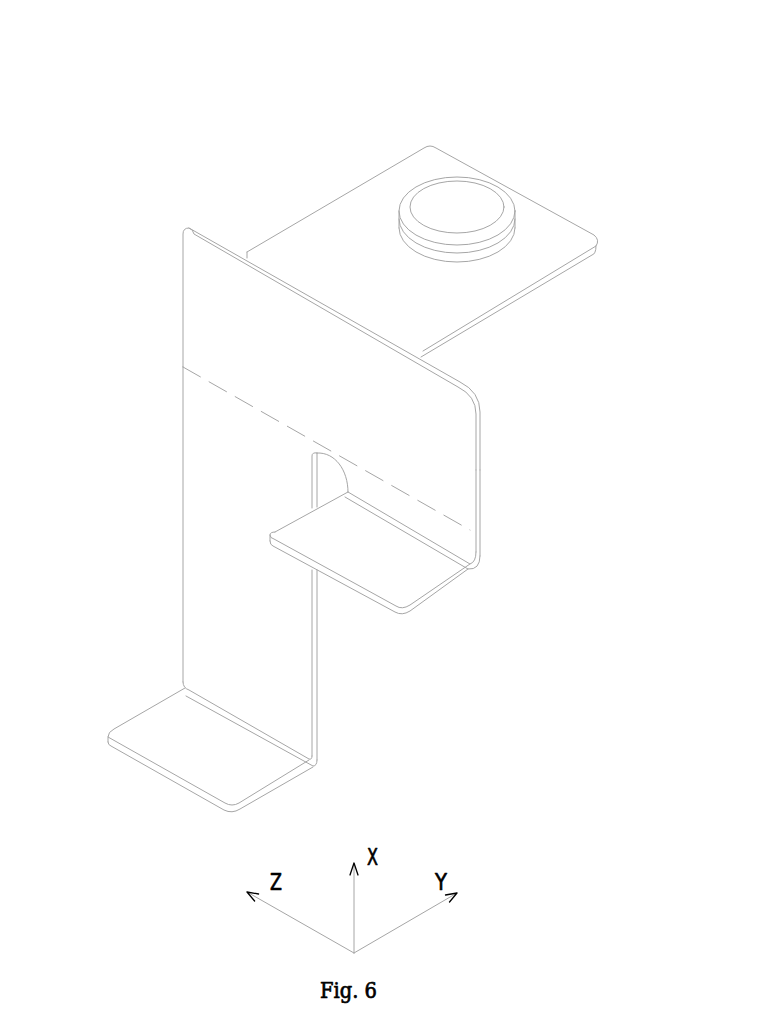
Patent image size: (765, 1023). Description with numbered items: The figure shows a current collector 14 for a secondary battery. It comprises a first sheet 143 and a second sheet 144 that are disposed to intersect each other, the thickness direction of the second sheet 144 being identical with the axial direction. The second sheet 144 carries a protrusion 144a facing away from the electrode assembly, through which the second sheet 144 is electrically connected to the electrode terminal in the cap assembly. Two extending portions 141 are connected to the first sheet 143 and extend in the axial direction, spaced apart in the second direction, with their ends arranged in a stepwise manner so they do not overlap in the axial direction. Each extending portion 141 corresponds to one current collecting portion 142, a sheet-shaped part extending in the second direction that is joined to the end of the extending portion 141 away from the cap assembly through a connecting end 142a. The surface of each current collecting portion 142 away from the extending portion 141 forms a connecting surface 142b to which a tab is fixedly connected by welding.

The current collector 14 is at (445, 50).
The extending portion 141 is at (233, 603).
The current collecting portion 142 is at (166, 723).
The connecting end 142a is at (320, 768).
The connecting surface 142b is at (155, 776).
The first sheet 143 is at (255, 326).
The second sheet 144 is at (332, 227).
The protrusion 144a is at (454, 200).